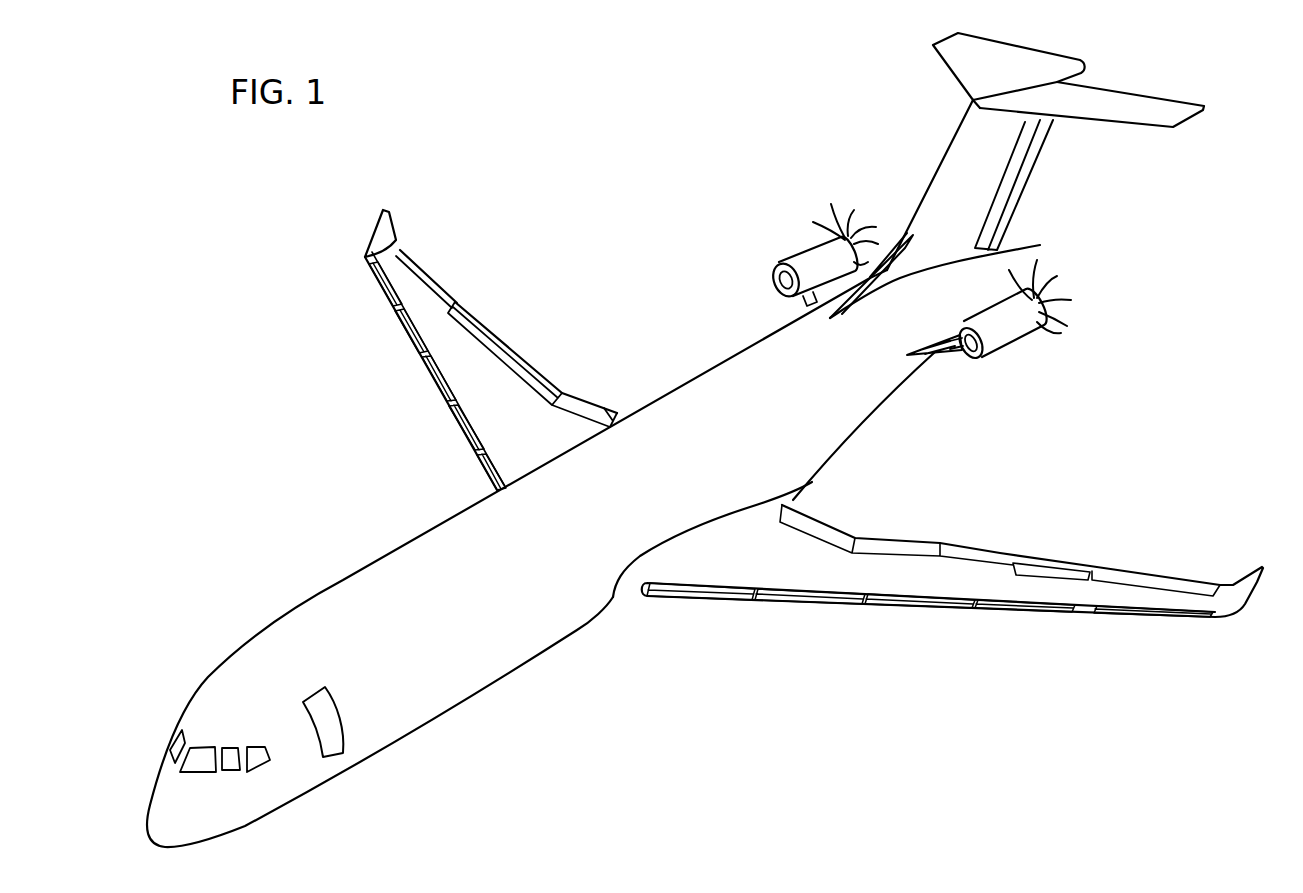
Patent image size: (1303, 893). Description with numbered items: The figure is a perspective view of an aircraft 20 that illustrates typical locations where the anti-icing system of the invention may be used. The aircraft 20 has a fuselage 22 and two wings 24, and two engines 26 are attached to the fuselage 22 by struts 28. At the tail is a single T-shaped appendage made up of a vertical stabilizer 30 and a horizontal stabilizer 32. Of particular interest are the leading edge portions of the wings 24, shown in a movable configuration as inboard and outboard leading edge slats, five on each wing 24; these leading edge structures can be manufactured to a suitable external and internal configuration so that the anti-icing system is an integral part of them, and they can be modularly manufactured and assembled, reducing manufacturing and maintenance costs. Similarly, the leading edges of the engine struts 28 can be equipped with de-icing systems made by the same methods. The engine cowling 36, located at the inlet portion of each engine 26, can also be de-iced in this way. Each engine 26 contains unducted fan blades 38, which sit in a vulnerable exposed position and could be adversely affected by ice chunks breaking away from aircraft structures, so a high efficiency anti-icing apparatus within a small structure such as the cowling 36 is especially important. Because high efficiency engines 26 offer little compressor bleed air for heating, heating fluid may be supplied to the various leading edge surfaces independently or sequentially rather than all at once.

The aircraft 20 is at (293, 512).
The fuselage 22 is at (286, 612).
The wing 24 is at (490, 376).
The engine 26 is at (805, 250).
The strut 28 is at (882, 262).
The vertical stabilizer 30 is at (935, 148).
The horizontal stabilizer 32 is at (1118, 133).
The engine cowling 36 is at (772, 275).
The unducted fan blades 38 is at (838, 212).